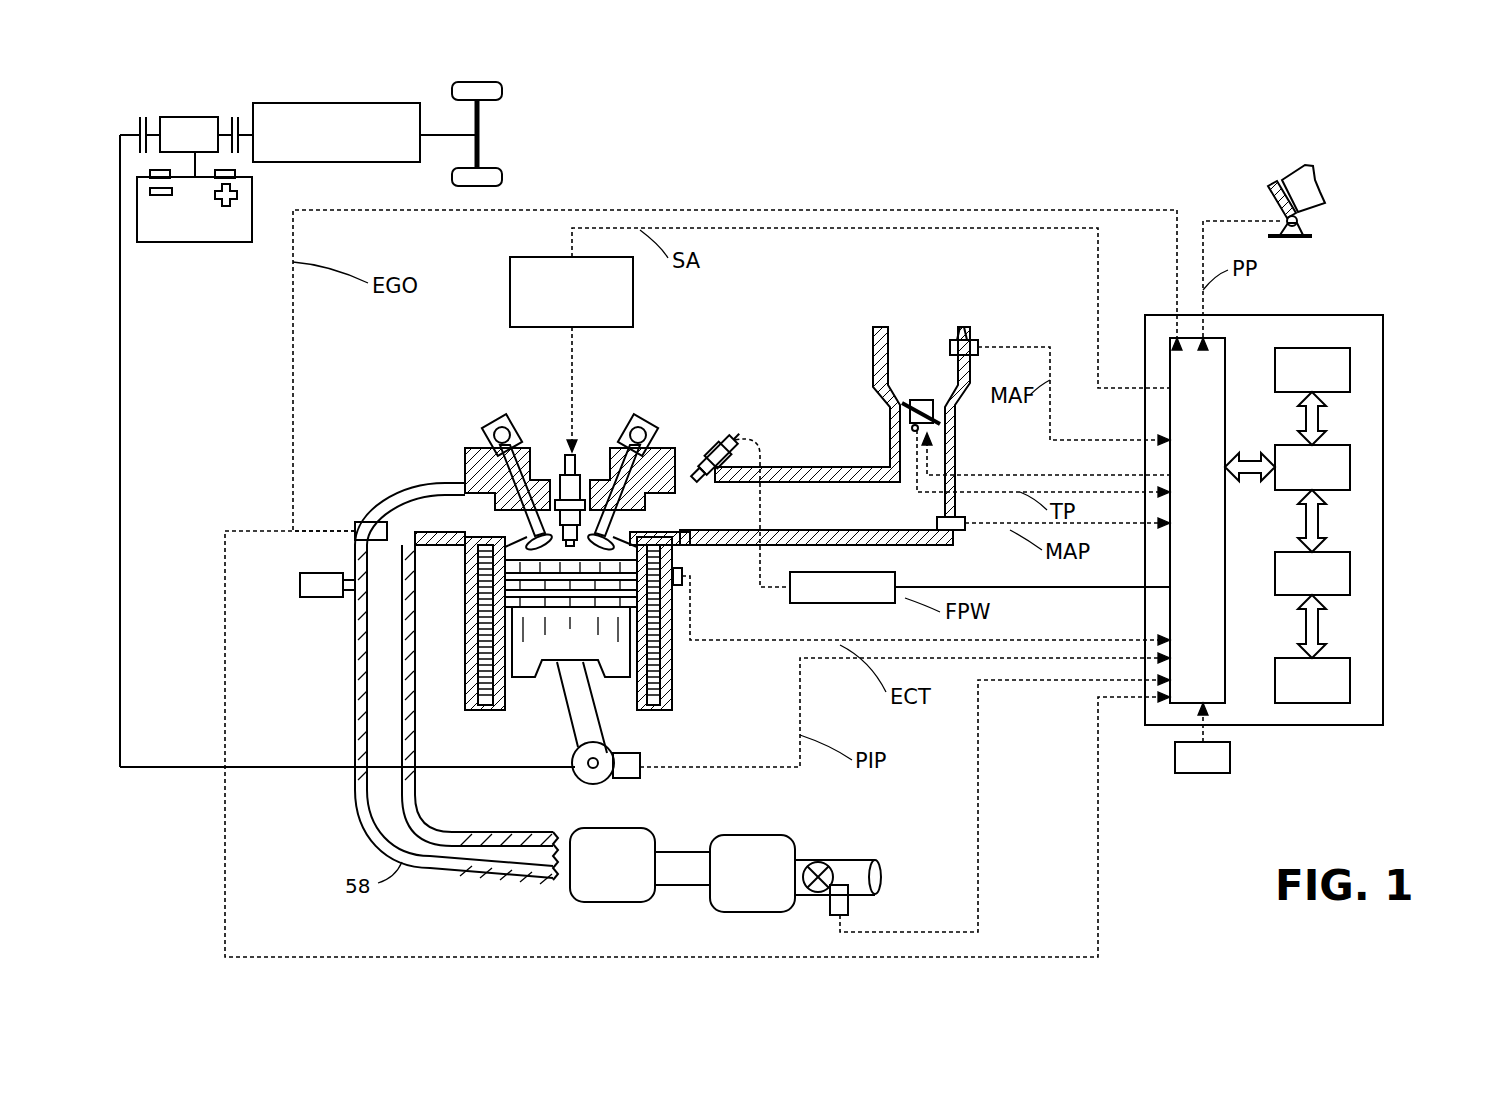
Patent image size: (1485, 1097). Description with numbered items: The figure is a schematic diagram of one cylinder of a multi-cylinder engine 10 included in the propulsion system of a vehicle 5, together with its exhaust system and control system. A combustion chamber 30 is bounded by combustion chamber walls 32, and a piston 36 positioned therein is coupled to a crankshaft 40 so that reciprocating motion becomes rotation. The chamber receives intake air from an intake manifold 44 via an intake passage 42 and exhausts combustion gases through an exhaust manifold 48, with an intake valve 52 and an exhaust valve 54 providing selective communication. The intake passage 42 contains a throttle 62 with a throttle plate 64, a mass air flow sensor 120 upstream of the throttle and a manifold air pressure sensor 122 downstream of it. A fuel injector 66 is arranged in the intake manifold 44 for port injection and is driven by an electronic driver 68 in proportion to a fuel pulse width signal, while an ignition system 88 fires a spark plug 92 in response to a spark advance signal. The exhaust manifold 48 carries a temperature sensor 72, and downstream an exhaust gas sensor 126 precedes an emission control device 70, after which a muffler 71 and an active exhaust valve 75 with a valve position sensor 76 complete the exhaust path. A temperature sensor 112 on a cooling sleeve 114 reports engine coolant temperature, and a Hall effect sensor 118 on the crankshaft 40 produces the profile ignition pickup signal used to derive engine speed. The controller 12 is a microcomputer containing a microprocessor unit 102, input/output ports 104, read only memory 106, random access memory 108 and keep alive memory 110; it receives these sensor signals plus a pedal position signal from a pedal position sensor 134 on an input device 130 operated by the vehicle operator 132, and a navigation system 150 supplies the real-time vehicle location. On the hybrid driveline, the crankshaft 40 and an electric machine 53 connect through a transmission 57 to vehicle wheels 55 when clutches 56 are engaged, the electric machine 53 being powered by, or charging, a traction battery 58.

The vehicle 5 is at (1400, 117).
The engine 10 is at (398, 403).
The controller 12 is at (1372, 316).
The combustion chamber 30 is at (568, 553).
The combustion chamber walls 32 is at (508, 702).
The piston 36 is at (572, 652).
The crankshaft 40 is at (588, 785).
The intake passage 42 is at (842, 422).
The intake manifold 44 is at (816, 521).
The exhaust manifold 48 is at (454, 683).
The intake valve 52 is at (615, 528).
The electric machine 53 is at (200, 117).
The exhaust valve 54 is at (525, 518).
The vehicle wheels 55 is at (494, 101).
The clutch 56 is at (140, 120).
The transmission 57 is at (398, 162).
The traction battery 58 is at (192, 243).
The throttle 62 is at (955, 414).
The throttle plate 64 is at (892, 414).
The fuel injector 66 is at (700, 445).
The electronic driver 68 is at (803, 603).
The emission control device 70 is at (606, 902).
The muffler 71 is at (762, 836).
The temperature sensor 72 is at (357, 528).
The active exhaust valve 75 is at (832, 863).
The valve position sensor 76 is at (849, 902).
The ignition system 88 is at (522, 257).
The spark plug 92 is at (575, 467).
The microprocessor unit 102 is at (1352, 462).
The input/output ports 104 is at (1228, 352).
The read only memory 106 is at (1352, 372).
The random access memory 108 is at (1352, 570).
The keep alive memory 110 is at (1352, 680).
The temperature sensor 112 is at (688, 577).
The cooling sleeve 114 is at (657, 656).
The Hall effect sensor 118 is at (628, 779).
The mass air flow sensor 120 is at (970, 340).
The manifold air pressure sensor 122 is at (960, 531).
The exhaust gas sensor 126 is at (300, 576).
The input device 130 is at (1272, 197).
The vehicle operator 132 is at (1325, 184).
The pedal position sensor 134 is at (1305, 222).
The navigation system 150 is at (1202, 757).